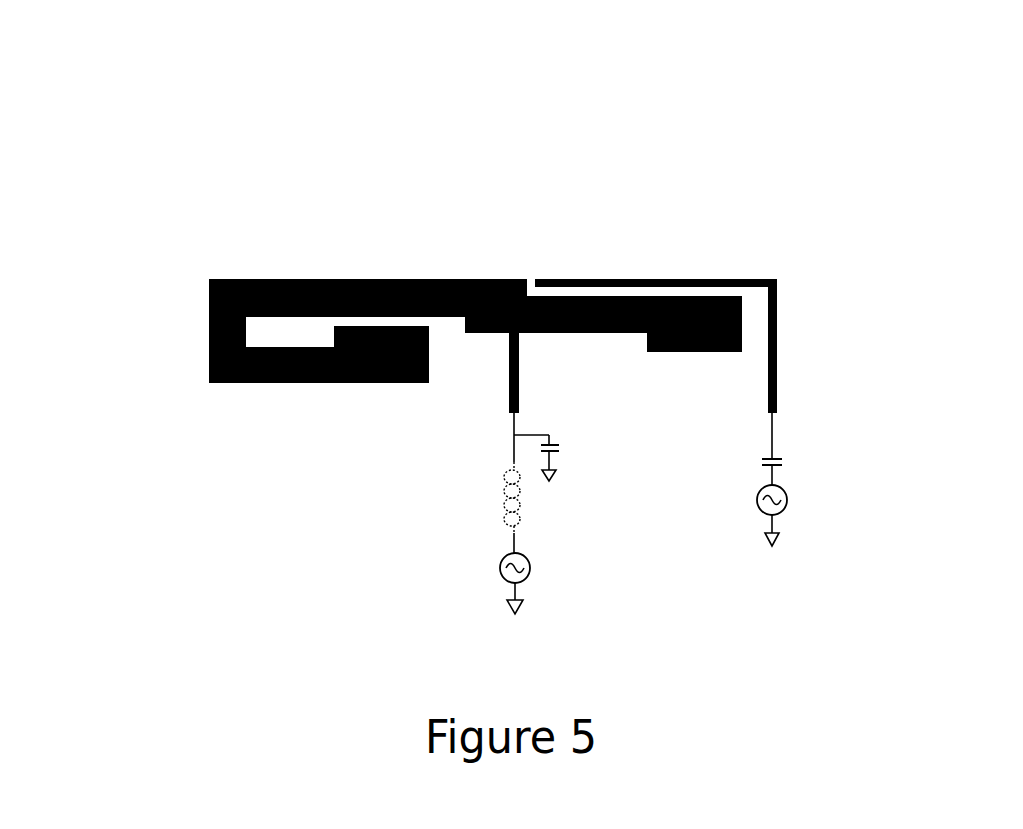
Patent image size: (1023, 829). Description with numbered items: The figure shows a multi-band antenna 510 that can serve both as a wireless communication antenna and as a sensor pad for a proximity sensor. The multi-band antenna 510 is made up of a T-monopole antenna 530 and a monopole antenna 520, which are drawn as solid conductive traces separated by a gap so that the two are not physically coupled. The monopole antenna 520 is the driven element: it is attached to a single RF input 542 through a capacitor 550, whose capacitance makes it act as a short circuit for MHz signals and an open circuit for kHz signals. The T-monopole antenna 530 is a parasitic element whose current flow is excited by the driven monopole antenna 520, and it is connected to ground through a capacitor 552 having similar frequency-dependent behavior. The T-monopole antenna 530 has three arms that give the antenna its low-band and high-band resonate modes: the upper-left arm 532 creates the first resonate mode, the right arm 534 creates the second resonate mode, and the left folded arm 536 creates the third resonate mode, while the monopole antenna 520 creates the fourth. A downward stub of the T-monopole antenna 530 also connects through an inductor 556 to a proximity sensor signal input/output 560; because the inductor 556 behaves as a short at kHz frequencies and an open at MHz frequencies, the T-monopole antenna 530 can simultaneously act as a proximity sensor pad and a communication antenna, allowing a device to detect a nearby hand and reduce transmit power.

The multi-band antenna 510 is at (421, 76).
The monopole antenna 520 is at (750, 270).
The T-monopole antenna 530 is at (360, 270).
The upper-left arm 532 is at (238, 280).
The right arm 534 is at (672, 352).
The left folded arm 536 is at (209, 375).
The RF input 542 is at (842, 515).
The capacitor 550 is at (782, 455).
The capacitor 552 is at (561, 450).
The inductor 556 is at (505, 497).
The proximity sensor signal input/output 560 is at (500, 568).